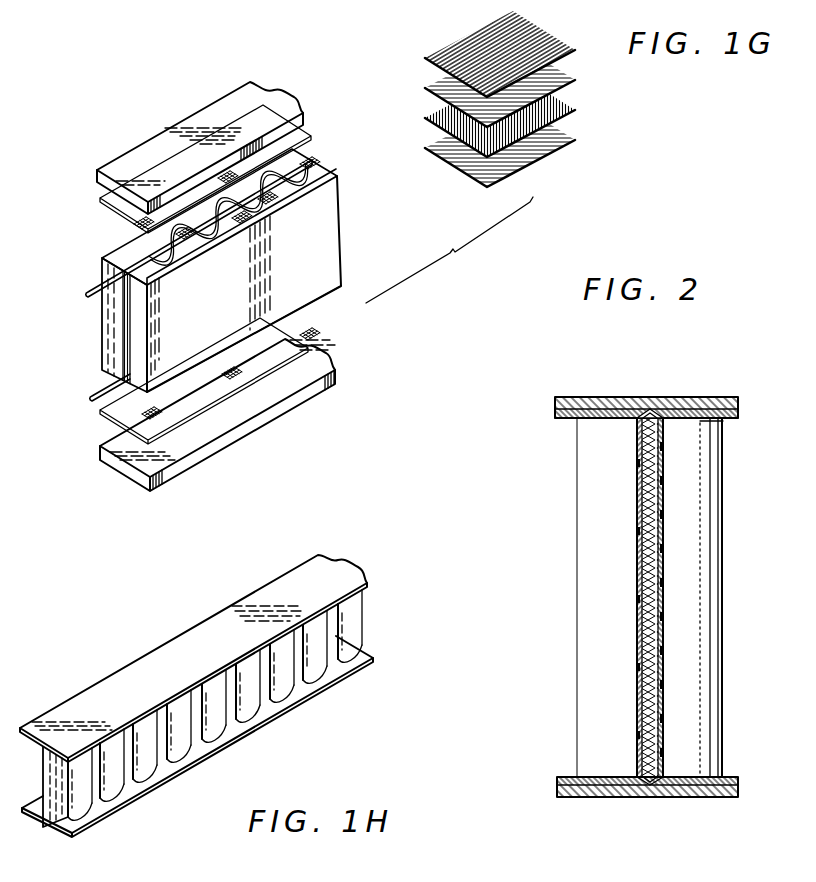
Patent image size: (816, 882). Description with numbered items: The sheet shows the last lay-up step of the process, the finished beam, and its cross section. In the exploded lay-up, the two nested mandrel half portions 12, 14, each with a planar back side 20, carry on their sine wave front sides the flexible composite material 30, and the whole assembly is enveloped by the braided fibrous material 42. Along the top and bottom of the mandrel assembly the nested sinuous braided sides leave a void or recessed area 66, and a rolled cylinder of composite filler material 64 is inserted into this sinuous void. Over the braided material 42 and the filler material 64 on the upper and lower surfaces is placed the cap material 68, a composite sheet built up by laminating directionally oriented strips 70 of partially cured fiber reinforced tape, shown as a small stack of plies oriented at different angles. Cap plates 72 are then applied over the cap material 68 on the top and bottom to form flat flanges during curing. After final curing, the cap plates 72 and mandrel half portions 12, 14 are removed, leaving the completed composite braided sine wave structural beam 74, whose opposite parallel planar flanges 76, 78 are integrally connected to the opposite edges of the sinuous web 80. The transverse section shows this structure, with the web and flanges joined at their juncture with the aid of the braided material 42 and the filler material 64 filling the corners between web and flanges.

In FIG. 1G, the mandrel half portion 12 is at (164, 389).
In FIG. 1G, the mandrel half portion 14 is at (97, 322).
In FIG. 1G, the planar back side 20 is at (366, 244).
In FIG. 1G, the composite material 30 is at (124, 363).
In FIG. 2, the composite material 30 is at (660, 623).
In FIG. 1G, the braided fibrous material 42 is at (124, 340).
In FIG. 2, the braided fibrous material 42 is at (645, 505).
In FIG. 1G, the filler material 64 is at (90, 294).
In FIG. 2, the filler material 64 is at (652, 412).
In FIG. 1G, the void or recessed area 66 is at (135, 250).
In FIG. 1G, the cap material 68 is at (96, 197).
In FIG. 2, the cap material 68 is at (594, 411).
In FIG. 1G, the strips of partially cured tape 70 is at (432, 147).
In FIG. 1G, the cap plate 72 is at (193, 122).
In FIG. 2, the composite braided sine wave structural beam 74 is at (550, 396).
In FIG. 1H, the composite braided sine wave structural beam 74 is at (168, 641).
In FIG. 2, the upper flange 76 is at (625, 397).
In FIG. 1H, the upper flange 76 is at (270, 593).
In FIG. 2, the lower flange 78 is at (555, 789).
In FIG. 1H, the lower flange 78 is at (340, 683).
In FIG. 2, the sinuous web 80 is at (703, 625).
In FIG. 1H, the sinuous web 80 is at (301, 690).